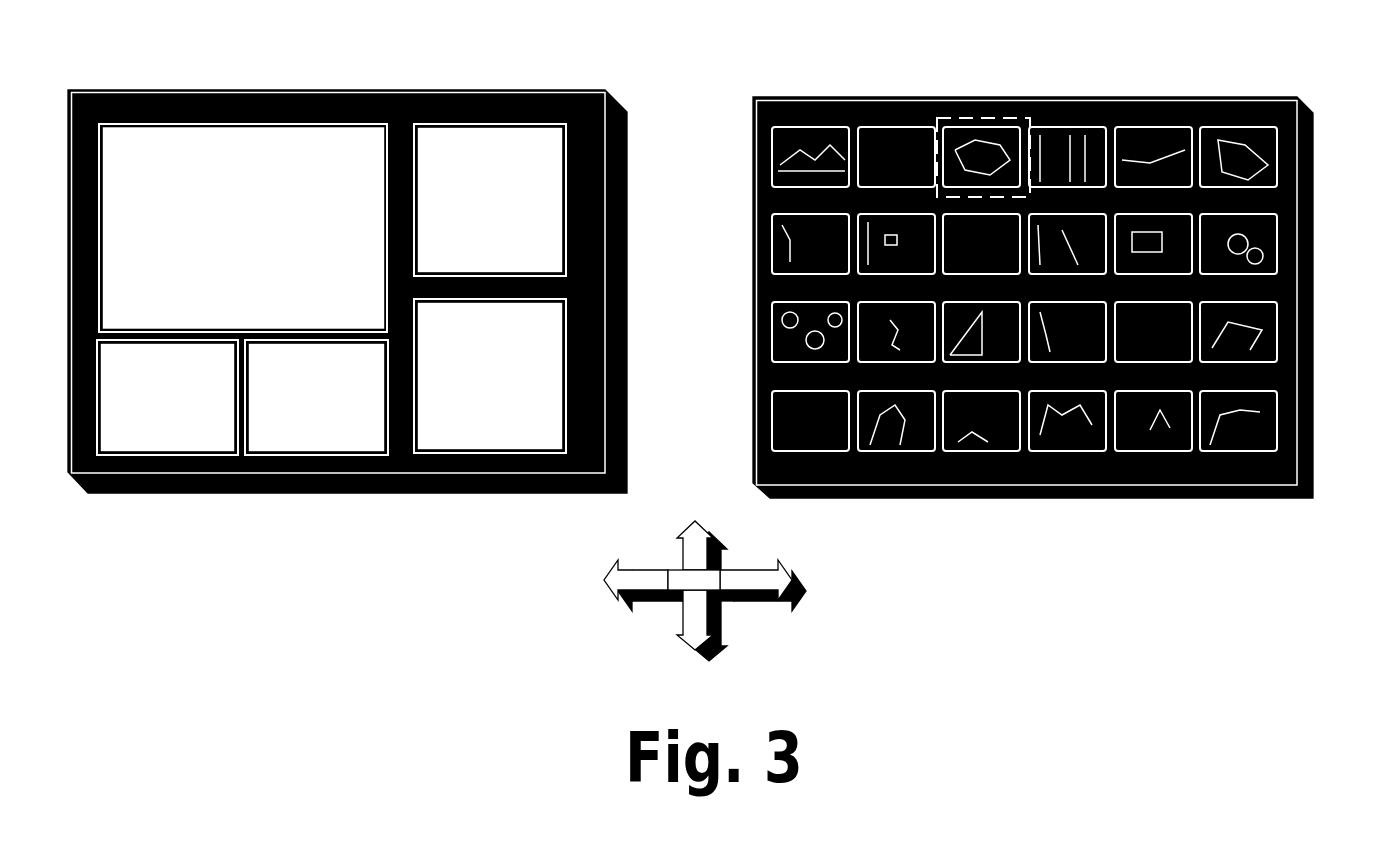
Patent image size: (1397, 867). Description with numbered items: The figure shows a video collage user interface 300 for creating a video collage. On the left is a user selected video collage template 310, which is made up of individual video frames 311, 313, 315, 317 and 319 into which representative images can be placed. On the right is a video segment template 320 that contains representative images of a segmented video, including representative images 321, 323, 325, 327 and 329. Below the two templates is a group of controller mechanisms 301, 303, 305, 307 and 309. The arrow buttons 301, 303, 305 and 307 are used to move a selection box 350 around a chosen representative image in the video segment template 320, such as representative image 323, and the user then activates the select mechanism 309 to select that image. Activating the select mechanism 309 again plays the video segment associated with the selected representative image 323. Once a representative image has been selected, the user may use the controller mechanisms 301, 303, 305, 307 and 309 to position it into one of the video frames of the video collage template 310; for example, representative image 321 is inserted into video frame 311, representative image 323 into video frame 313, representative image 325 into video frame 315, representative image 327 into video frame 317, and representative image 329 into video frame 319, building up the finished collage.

The video collage user interface 300 is at (703, 44).
The video collage template 310 is at (340, 90).
The individual video frame 311 is at (193, 410).
The individual video frame 313 is at (342, 410).
The individual video frame 315 is at (268, 242).
The individual video frame 317 is at (515, 214).
The individual video frame 319 is at (515, 389).
The video segment template 320 is at (1247, 97).
The representative image 321 is at (822, 127).
The representative image 323 is at (772, 342).
The representative image 325 is at (1278, 330).
The representative image 327 is at (893, 452).
The representative image 329 is at (1063, 452).
The selection box 350 is at (969, 118).
The arrow button 301 is at (705, 525).
The arrow button 303 is at (790, 565).
The arrow button 305 is at (722, 662).
The arrow button 307 is at (612, 573).
The select mechanism 309 is at (675, 572).